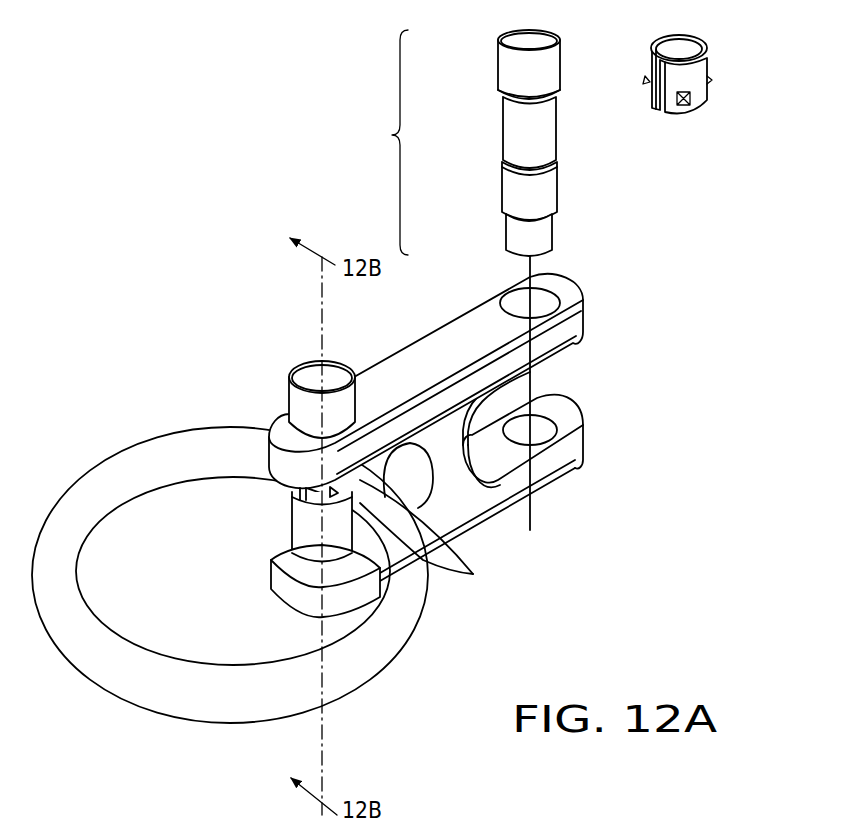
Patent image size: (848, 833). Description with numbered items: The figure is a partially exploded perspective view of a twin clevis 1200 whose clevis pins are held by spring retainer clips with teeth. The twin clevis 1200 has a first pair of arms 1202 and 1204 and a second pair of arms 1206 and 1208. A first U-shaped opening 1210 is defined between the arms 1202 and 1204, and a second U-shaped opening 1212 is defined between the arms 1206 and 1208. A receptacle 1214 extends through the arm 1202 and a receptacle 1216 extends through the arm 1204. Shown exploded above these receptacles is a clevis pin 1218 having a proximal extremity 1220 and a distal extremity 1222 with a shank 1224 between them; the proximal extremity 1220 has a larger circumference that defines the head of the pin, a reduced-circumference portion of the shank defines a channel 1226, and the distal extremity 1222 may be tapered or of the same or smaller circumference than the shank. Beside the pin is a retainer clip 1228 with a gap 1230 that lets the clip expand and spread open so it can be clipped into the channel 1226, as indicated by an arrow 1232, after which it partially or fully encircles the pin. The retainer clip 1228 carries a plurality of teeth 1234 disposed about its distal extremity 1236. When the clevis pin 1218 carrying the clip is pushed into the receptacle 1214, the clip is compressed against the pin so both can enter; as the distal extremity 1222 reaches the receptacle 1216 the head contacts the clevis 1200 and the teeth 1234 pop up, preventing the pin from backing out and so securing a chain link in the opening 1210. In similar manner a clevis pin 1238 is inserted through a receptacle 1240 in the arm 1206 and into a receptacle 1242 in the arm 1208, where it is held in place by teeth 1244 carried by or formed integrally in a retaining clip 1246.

The twin clevis 1200 is at (487, 412).
The arm 1202 is at (595, 308).
The arm 1204 is at (588, 440).
The arm 1206 is at (266, 440).
The arm 1208 is at (275, 562).
The first U-shaped opening 1210 is at (590, 383).
The second U-shaped opening 1212 is at (228, 567).
The receptacle 1214 is at (548, 296).
The receptacle 1216 is at (584, 415).
The clevis pin 1218 is at (441, 154).
The proximal extremity 1220 is at (500, 66).
The distal extremity 1222 is at (500, 220).
The shank 1224 is at (505, 184).
The channel 1226 is at (505, 124).
The retainer clip 1228 is at (708, 48).
The gap 1230 is at (654, 118).
The arrow 1232 is at (575, 118).
The teeth 1234 is at (690, 100).
The distal extremity 1236 is at (681, 118).
The clevis pin 1238 is at (304, 362).
The receptacle 1240 is at (287, 413).
The receptacle 1242 is at (372, 596).
The teeth 1244 is at (466, 574).
The retaining clip 1246 is at (297, 508).